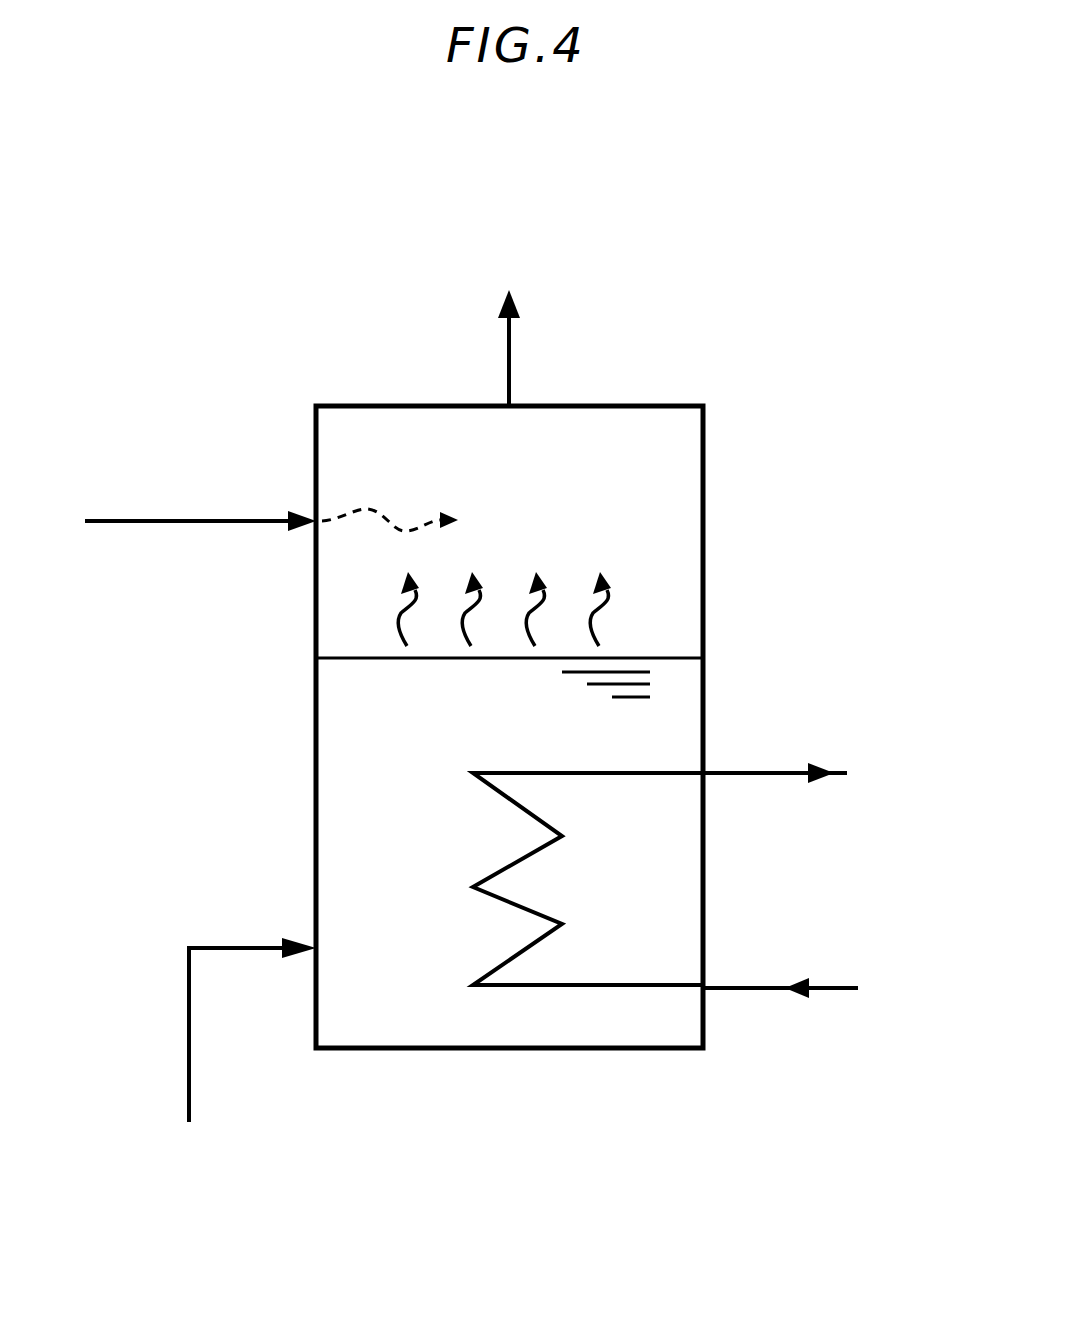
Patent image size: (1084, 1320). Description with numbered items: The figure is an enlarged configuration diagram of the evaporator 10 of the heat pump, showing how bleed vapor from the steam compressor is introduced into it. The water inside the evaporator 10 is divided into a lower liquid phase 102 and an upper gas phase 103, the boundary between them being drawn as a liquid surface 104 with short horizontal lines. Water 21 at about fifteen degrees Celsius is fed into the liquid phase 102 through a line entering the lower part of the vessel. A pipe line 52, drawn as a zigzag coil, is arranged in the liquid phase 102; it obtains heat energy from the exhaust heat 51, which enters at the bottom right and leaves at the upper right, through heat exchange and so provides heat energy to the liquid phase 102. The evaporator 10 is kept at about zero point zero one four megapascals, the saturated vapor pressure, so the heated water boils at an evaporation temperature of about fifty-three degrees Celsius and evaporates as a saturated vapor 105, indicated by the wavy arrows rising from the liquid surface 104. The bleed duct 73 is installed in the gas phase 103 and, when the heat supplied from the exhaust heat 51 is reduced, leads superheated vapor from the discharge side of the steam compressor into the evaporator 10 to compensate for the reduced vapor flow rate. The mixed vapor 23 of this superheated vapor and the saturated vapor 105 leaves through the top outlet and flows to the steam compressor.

The evaporator 10 is at (435, 1050).
The water 21 is at (212, 948).
The mixed vapor 23 is at (509, 360).
The exhaust heat 51 is at (833, 990).
The pipe line 52 is at (578, 983).
The bleed duct 73 is at (122, 521).
The liquid phase 102 is at (400, 745).
The gas phase 103 is at (400, 464).
The liquid surface 104 is at (677, 657).
The saturated vapor 105 is at (603, 580).